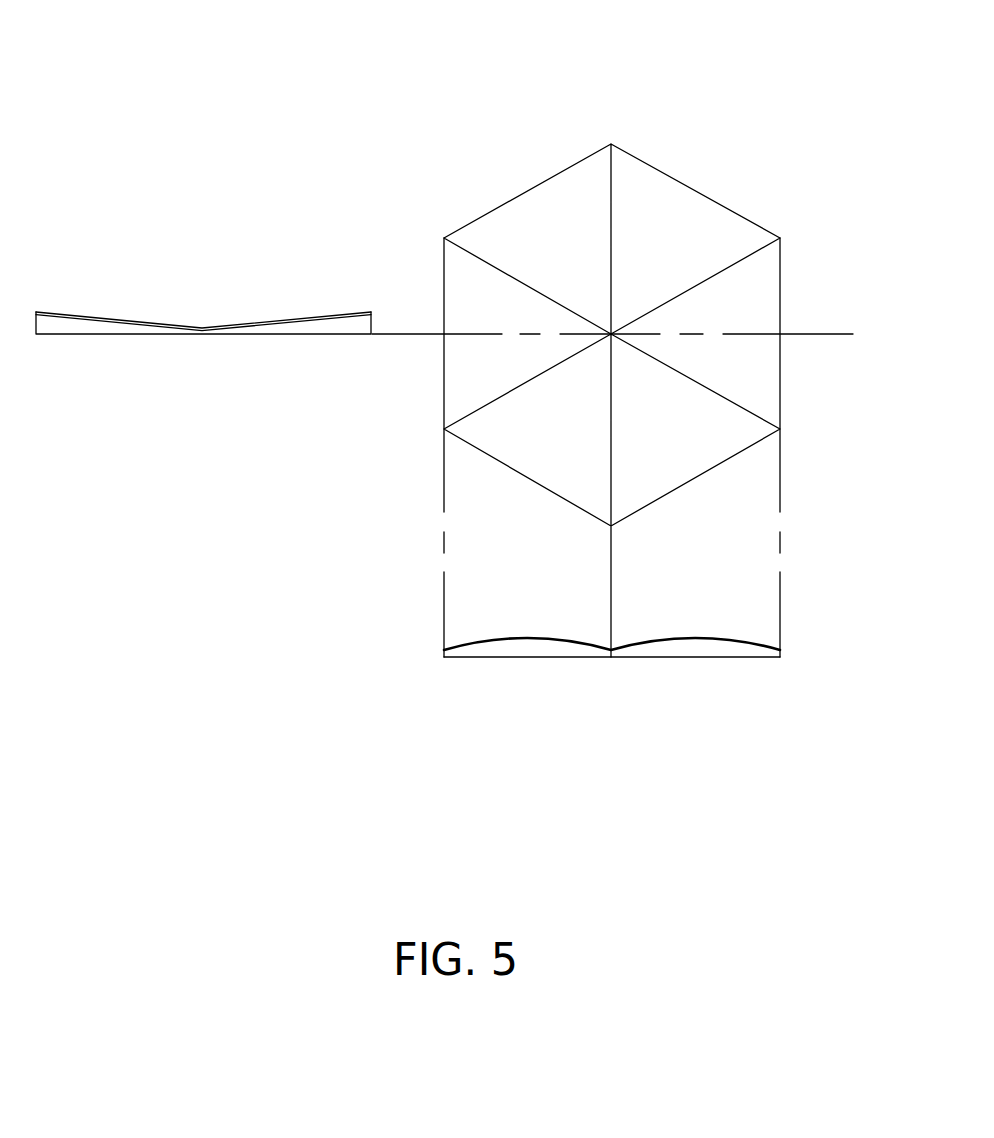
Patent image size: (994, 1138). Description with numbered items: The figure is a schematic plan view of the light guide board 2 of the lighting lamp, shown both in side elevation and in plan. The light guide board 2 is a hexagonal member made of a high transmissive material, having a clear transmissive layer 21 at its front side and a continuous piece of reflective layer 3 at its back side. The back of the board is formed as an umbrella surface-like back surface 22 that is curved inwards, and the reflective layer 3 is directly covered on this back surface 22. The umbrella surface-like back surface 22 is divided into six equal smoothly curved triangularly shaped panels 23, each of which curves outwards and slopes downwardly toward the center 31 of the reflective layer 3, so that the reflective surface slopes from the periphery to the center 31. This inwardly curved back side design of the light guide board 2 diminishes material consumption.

The light guide board 2 is at (611, 144).
The clear transmissive layer 21 is at (550, 652).
The umbrella surface-like back surface 22 is at (148, 322).
The smoothly curved triangularly shaped panel 23 is at (695, 480).
The reflective layer 3 is at (275, 317).
The center 31 is at (202, 334).